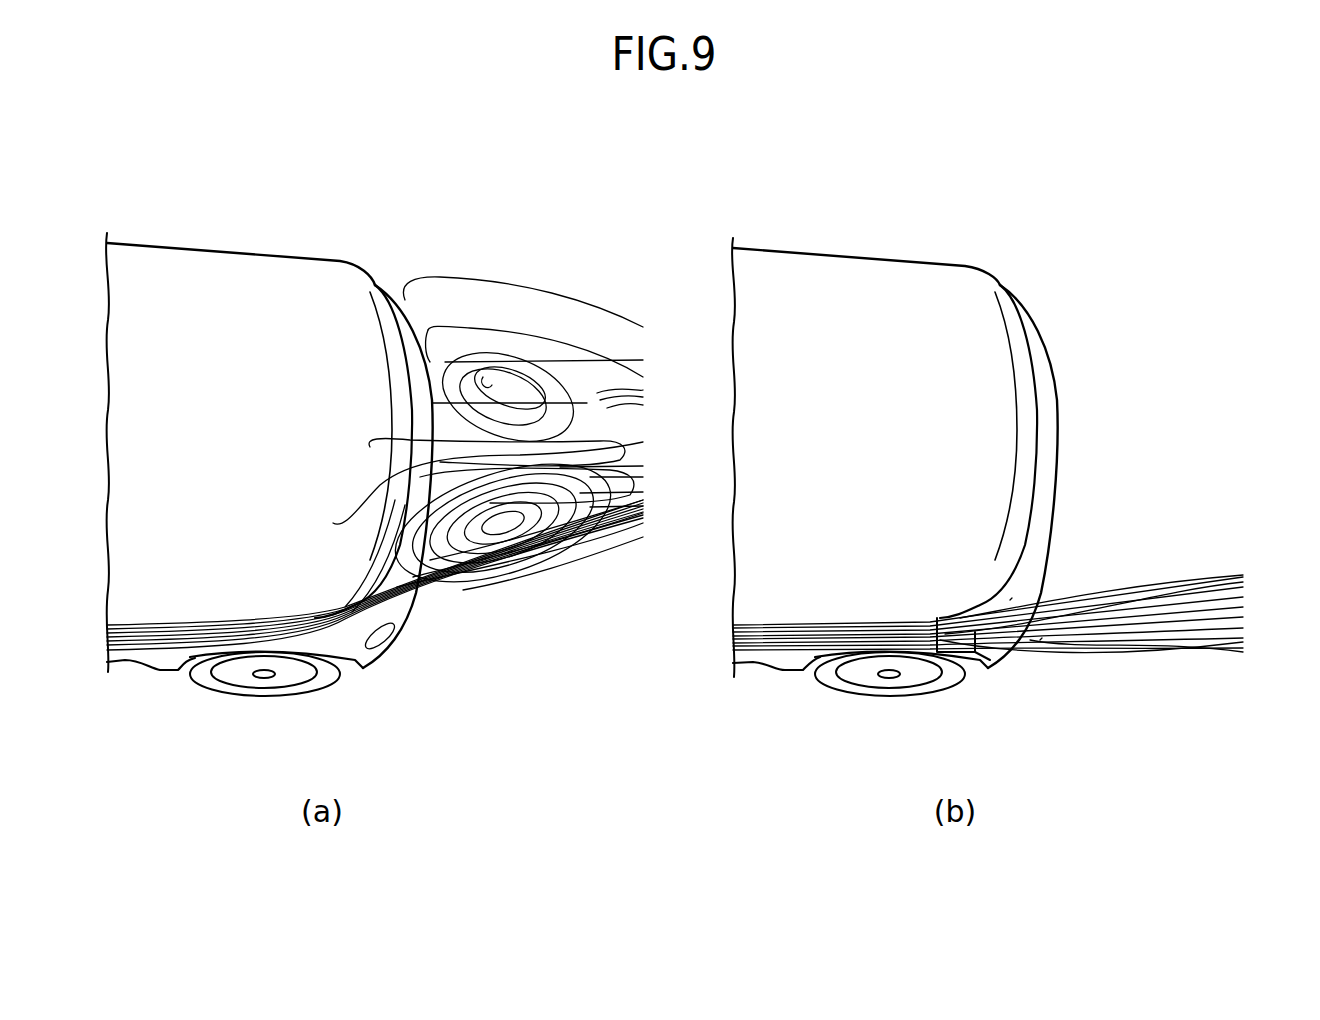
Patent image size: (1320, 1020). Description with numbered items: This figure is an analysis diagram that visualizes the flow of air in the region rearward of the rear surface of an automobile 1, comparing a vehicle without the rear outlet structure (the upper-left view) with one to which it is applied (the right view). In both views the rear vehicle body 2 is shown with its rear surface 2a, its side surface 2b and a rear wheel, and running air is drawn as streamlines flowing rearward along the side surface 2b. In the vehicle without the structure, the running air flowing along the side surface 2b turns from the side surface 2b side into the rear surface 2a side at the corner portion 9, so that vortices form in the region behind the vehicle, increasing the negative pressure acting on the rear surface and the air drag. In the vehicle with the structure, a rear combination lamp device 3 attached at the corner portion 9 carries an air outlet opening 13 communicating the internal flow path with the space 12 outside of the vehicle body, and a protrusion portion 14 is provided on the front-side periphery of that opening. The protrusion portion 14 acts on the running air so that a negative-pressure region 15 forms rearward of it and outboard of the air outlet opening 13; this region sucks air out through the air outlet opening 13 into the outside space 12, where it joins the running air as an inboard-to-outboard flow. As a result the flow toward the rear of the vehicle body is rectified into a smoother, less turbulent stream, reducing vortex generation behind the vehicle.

The automobile 1 is at (795, 235).
The rear vehicle body 2 is at (293, 273).
The rear surface 2a is at (440, 385).
The side surface 2b is at (290, 642).
The rear combination lamp device 3 is at (1010, 600).
The corner portion 9 is at (373, 666).
The space outside of the vehicle body 12 is at (472, 687).
The air outlet opening 13 is at (985, 650).
The protrusion portion 14 is at (977, 650).
The negative-pressure region 15 is at (1040, 640).